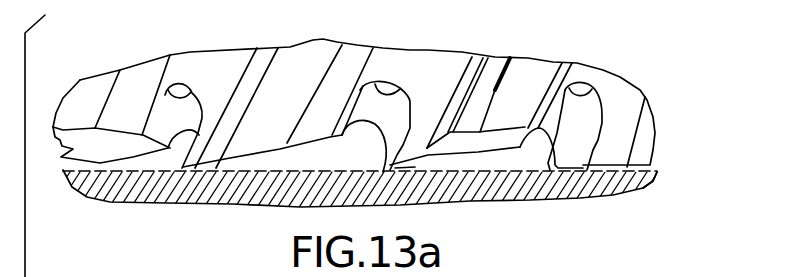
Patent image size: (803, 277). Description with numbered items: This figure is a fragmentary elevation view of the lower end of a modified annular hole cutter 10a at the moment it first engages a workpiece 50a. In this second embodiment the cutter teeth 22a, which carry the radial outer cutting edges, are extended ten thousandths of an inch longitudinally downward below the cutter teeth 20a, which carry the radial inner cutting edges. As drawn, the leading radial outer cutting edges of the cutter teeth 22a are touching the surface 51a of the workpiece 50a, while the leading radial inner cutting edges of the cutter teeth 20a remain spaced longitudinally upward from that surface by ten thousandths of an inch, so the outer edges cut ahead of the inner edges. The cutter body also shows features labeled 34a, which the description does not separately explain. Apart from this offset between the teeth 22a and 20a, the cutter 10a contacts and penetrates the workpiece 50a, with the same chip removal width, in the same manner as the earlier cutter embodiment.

The annular hole cutter 10a is at (568, 50).
The ball seat bores 34a is at (200, 92).
The cutter teeth 22a is at (226, 172).
The cutter teeth 20a is at (418, 167).
The workpiece 50a is at (649, 200).
The surface 51a is at (645, 170).